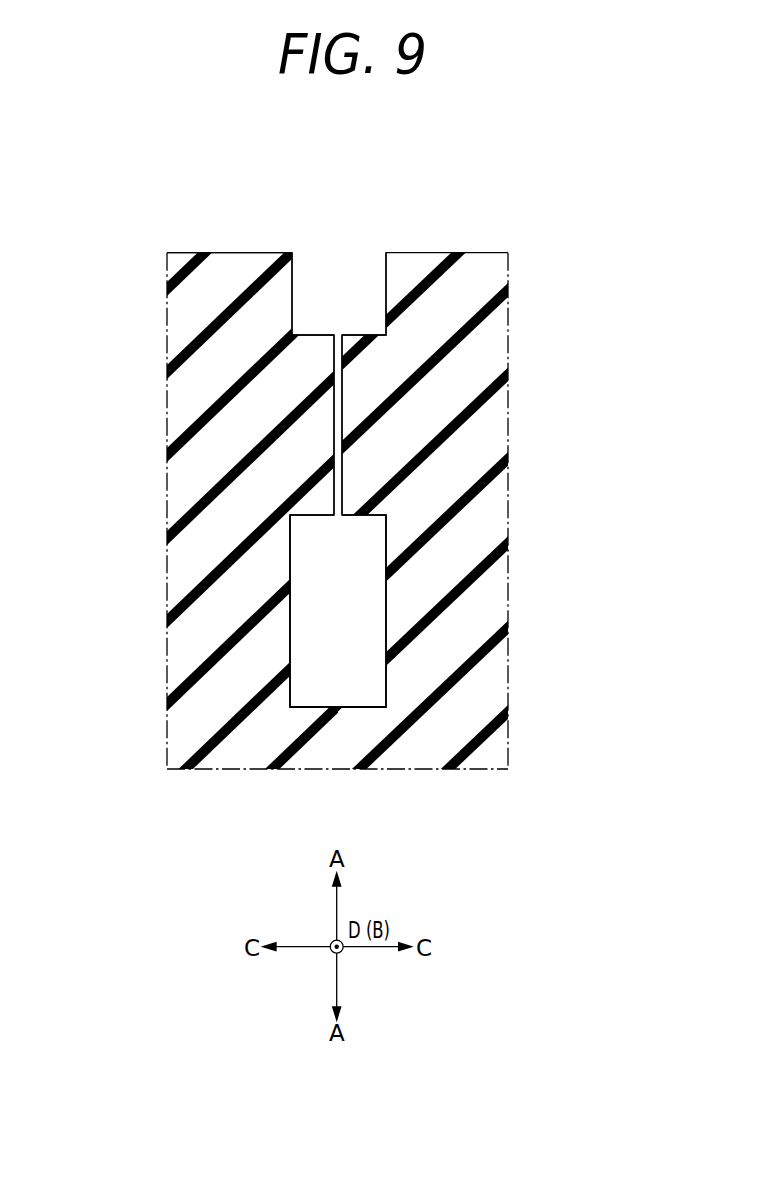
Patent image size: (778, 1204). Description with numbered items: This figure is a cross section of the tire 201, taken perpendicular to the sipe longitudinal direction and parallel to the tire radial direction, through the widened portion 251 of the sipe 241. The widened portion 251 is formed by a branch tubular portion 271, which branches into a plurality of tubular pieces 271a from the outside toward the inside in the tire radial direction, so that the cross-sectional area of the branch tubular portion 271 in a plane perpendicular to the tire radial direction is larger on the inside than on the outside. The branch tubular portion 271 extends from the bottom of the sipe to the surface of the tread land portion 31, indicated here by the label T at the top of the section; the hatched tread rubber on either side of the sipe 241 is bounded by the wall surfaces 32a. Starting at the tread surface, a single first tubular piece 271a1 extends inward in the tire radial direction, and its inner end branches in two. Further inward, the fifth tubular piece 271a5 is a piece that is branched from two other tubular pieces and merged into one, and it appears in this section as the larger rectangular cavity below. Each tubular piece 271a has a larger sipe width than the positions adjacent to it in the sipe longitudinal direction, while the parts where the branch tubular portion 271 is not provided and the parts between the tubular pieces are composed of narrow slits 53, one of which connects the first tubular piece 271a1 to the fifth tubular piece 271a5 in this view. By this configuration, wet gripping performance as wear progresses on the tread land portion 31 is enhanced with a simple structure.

The tire 201 is at (346, 602).
The top surface T is at (235, 253).
The first tubular piece 271a1 is at (327, 307).
The tubular pieces 271a is at (329, 260).
The sipe 241 is at (347, 260).
The wall surface 32a is at (198, 393).
The tread land portion 31 is at (346, 602).
The slits 53 is at (337, 423).
The fifth tubular piece 271a5 is at (378, 607).
The branch tubular portion 271 is at (295, 623).
The widened portion 251 is at (298, 669).